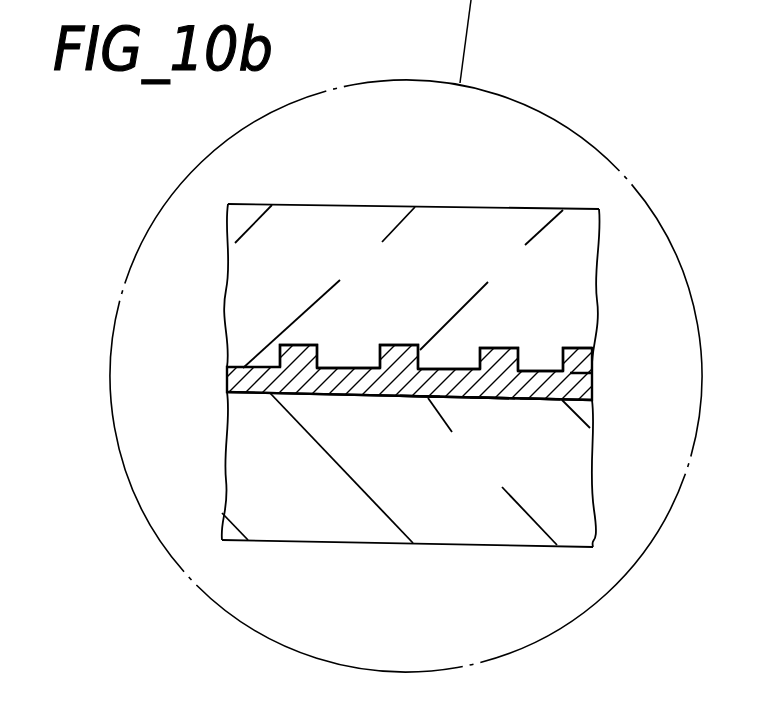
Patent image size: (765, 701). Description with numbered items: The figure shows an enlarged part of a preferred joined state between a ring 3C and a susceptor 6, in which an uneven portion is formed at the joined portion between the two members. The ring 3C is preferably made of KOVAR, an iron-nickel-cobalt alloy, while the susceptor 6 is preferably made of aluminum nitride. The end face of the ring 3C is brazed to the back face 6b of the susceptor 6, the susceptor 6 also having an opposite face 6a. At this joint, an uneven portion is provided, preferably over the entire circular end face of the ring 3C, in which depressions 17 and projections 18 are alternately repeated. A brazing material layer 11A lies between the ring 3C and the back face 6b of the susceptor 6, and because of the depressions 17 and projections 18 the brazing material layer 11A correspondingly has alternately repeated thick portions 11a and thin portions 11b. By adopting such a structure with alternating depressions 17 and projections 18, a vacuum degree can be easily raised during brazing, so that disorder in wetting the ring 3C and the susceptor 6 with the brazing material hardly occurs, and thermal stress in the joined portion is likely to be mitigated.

The ring 3C is at (303, 205).
The susceptor 6 is at (237, 452).
The bottom surface of substrate 6a is at (400, 547).
The back face of susceptor 6b is at (342, 396).
The metal film layer 11A is at (328, 367).
The first portion of metal film 11a is at (422, 397).
The second portion of metal film 11b is at (497, 398).
The depression 17 is at (289, 344).
The projection 18 is at (349, 368).